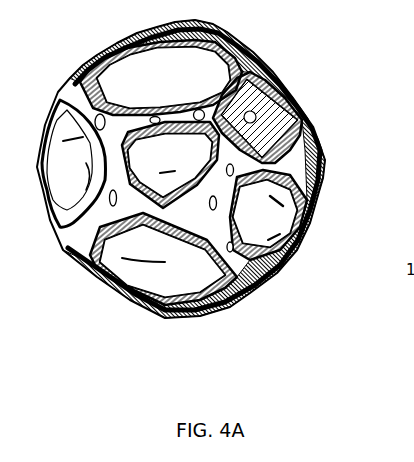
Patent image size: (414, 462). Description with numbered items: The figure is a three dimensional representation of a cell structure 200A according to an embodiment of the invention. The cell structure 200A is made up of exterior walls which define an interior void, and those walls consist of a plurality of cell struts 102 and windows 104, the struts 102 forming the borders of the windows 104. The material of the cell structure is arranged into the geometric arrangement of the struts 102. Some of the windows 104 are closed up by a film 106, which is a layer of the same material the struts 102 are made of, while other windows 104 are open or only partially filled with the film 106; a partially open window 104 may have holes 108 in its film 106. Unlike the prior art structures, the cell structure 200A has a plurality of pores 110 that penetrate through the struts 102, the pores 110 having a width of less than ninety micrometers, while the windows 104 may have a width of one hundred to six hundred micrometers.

The cell structure 200A is at (74, 36).
The cell struts 102 is at (97, 227).
The windows 104 is at (180, 66).
The film 106 is at (262, 95).
The holes 108 is at (257, 115).
The pores 110 is at (234, 169).